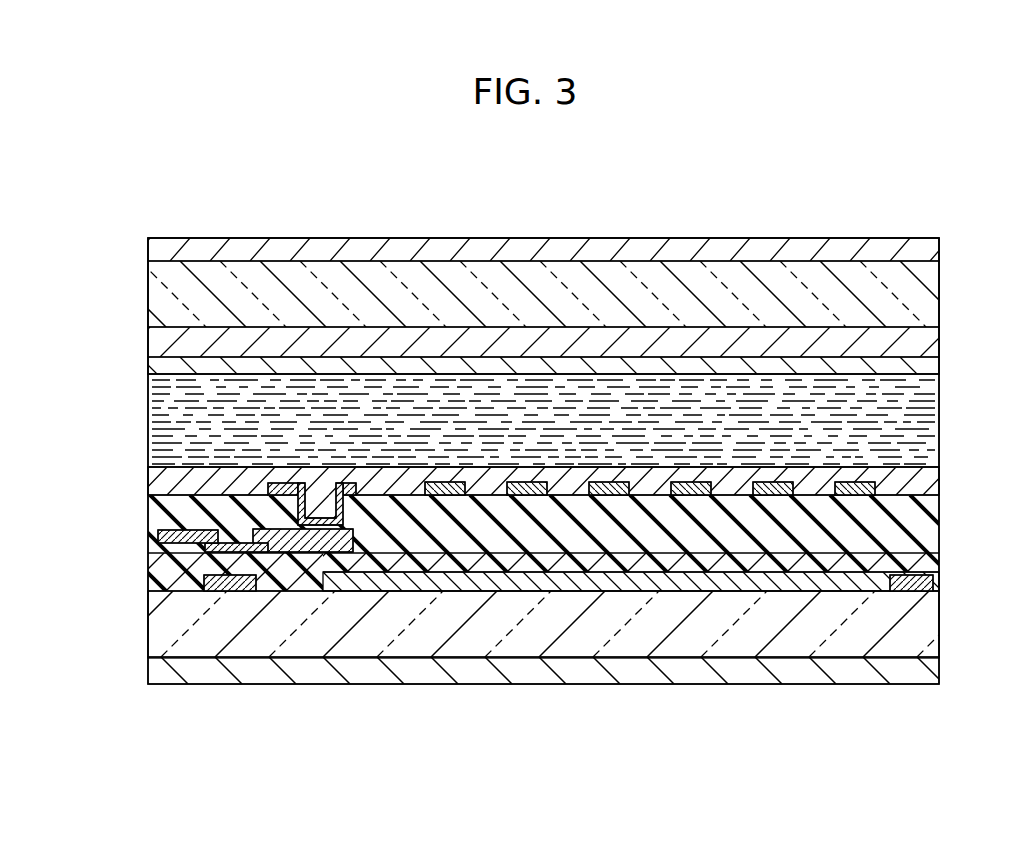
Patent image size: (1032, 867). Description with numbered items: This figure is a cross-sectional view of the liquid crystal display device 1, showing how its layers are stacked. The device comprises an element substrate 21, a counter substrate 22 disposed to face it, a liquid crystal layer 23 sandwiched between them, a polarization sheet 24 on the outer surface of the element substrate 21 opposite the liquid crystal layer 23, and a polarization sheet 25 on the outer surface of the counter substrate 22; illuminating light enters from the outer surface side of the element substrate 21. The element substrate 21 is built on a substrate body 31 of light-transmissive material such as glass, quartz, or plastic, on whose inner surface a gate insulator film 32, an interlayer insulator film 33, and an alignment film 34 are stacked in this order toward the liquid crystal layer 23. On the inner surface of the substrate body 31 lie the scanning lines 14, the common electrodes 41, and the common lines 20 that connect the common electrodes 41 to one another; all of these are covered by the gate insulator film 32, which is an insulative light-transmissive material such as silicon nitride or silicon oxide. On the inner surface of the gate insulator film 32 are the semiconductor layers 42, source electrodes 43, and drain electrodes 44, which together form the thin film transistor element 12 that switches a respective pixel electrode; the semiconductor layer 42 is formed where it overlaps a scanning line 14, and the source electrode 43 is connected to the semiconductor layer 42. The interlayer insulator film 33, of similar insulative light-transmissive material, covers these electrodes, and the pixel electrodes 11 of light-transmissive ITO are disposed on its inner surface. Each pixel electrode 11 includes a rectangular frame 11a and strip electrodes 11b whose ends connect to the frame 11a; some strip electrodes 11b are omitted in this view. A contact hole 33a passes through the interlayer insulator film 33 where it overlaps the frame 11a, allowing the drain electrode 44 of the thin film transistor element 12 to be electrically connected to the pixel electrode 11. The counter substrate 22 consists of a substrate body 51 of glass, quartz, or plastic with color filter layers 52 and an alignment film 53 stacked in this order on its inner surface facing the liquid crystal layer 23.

The liquid crystal display device 1 is at (840, 205).
The pixel electrode 11 is at (649, 322).
The frame 11a is at (451, 482).
The strip electrode 11b is at (603, 482).
The thin film transistor element 12 is at (255, 652).
The scanning line 14 is at (262, 585).
The common line 20 is at (907, 578).
The element substrate 21 is at (140, 470).
The counter substrate 22 is at (140, 238).
The liquid crystal layer 23 is at (140, 378).
The polarization sheet 24 is at (934, 663).
The polarization sheet 25 is at (934, 250).
The substrate body 31 is at (934, 611).
The gate insulator film 32 is at (934, 572).
The interlayer insulator film 33 is at (934, 518).
The contact hole 33a is at (306, 518).
The alignment film 34 is at (934, 477).
The common electrode 41 is at (540, 591).
The semiconductor layer 42 is at (219, 550).
The source electrode 43 is at (174, 545).
The drain electrode 44 is at (260, 540).
The substrate body 51 is at (934, 296).
The color filter layer 52 is at (934, 339).
The alignment film 53 is at (930, 363).